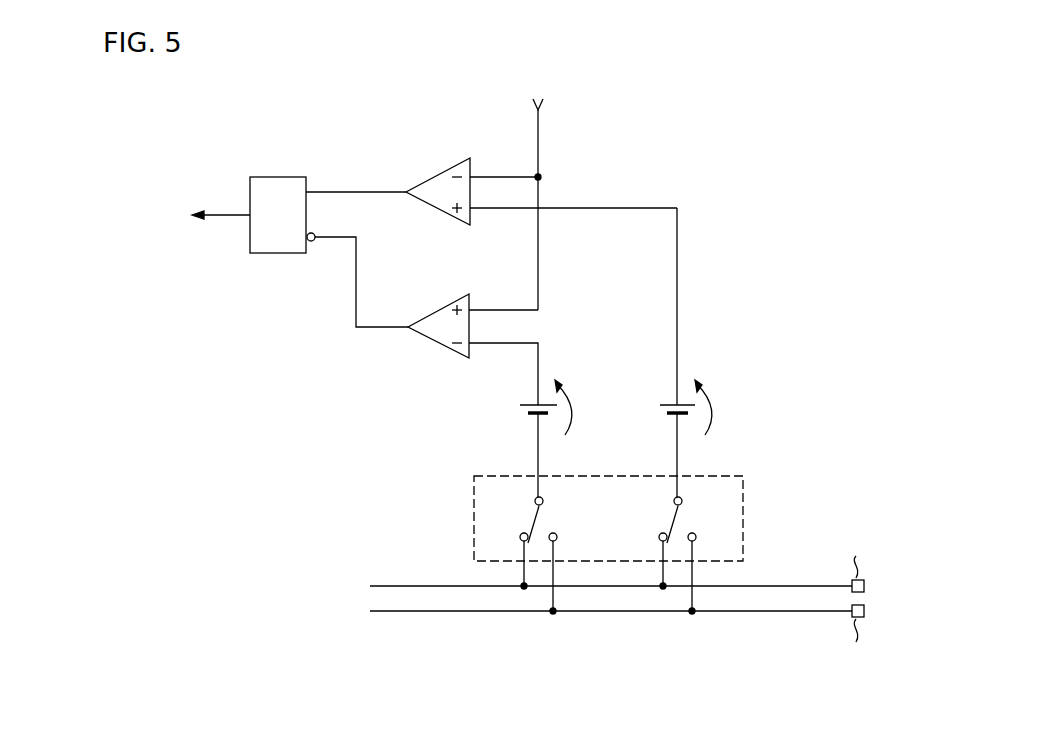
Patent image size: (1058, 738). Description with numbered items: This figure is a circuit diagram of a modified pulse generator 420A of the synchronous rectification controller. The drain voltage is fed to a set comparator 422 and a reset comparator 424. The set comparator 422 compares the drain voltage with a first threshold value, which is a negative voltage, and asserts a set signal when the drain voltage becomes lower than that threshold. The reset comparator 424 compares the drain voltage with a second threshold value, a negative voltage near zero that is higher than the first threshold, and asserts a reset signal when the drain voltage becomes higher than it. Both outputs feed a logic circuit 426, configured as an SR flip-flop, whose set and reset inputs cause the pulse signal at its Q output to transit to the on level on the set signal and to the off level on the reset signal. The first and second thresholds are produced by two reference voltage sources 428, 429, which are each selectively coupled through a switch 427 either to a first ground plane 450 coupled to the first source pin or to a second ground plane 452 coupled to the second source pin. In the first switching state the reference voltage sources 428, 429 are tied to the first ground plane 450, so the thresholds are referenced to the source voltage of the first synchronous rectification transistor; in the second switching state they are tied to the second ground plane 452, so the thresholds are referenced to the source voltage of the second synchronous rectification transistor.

The pulse generator 420A is at (546, 728).
The set comparator 422 is at (428, 177).
The reset comparator 424 is at (426, 312).
The logic circuit 426 is at (272, 176).
The switch 427 is at (743, 494).
The reference voltage source 428 is at (652, 414).
The reference voltage source 429 is at (512, 414).
The first ground plane 450 is at (392, 583).
The second ground plane 452 is at (392, 613).